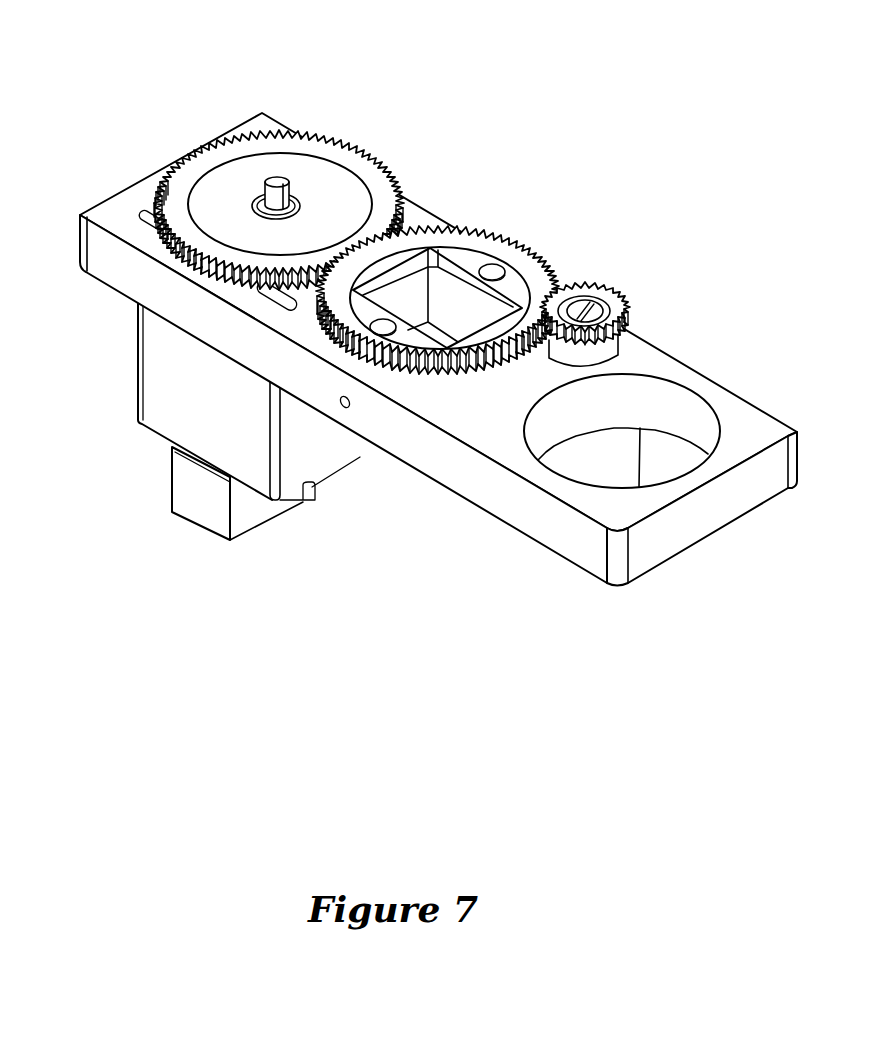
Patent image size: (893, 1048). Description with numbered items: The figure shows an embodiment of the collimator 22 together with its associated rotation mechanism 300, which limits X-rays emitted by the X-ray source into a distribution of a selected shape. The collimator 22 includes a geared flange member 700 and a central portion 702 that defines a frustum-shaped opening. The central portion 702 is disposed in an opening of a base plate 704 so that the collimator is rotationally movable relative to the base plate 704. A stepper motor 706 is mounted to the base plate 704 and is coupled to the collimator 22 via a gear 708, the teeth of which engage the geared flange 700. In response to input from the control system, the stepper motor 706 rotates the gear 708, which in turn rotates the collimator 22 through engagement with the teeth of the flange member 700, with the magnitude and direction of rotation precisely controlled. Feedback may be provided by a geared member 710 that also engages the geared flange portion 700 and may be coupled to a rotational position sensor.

The rotation mechanism 300 is at (412, 350).
The collimator 22 is at (536, 228).
The geared flange member 700 is at (492, 228).
The central portion 702 is at (443, 285).
The base plate 704 is at (465, 476).
The stepper motor 706 is at (162, 378).
The gear 708 is at (308, 153).
The geared member 710 is at (612, 295).